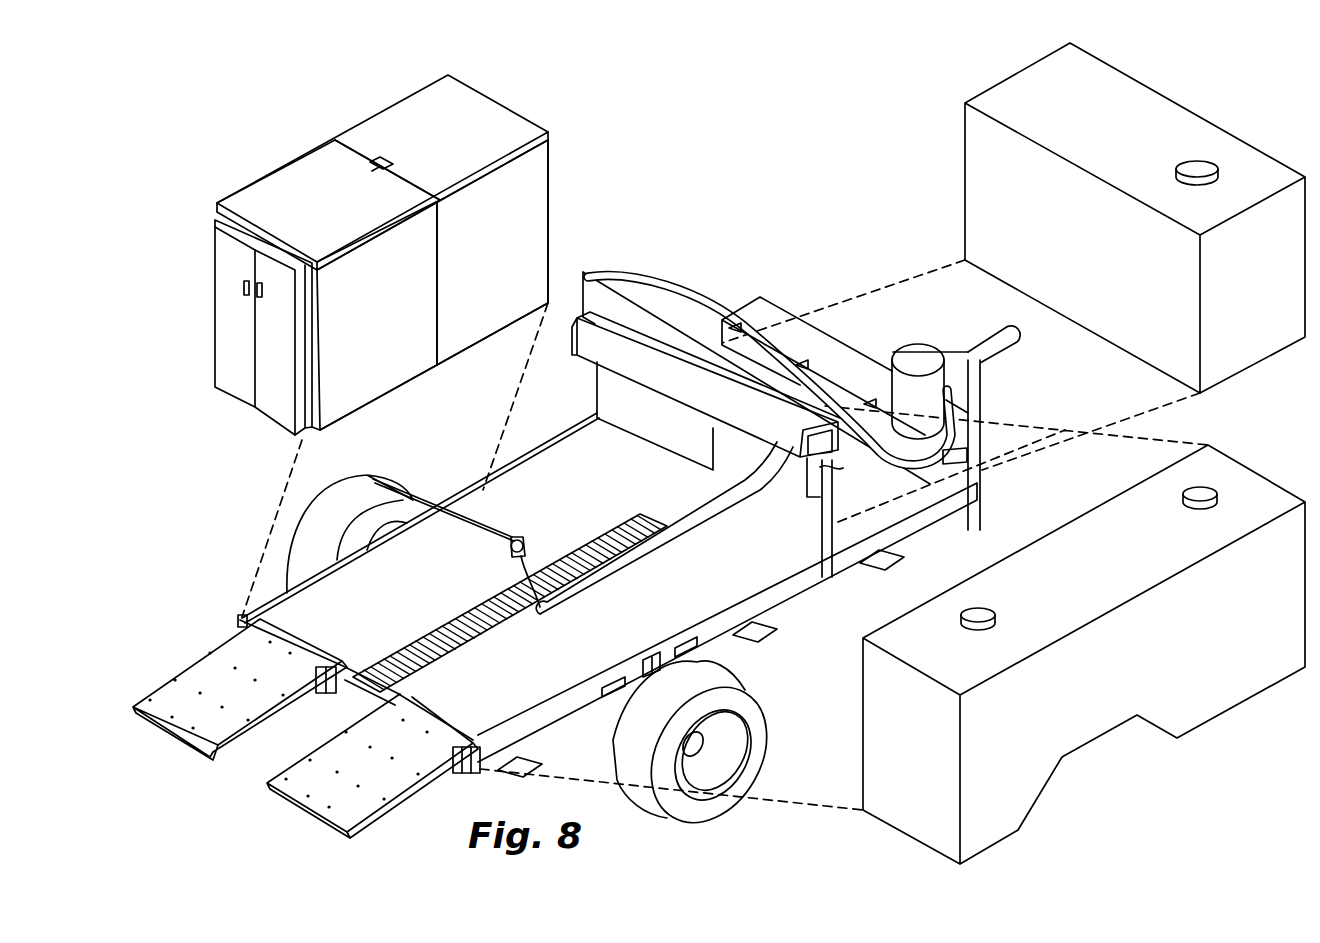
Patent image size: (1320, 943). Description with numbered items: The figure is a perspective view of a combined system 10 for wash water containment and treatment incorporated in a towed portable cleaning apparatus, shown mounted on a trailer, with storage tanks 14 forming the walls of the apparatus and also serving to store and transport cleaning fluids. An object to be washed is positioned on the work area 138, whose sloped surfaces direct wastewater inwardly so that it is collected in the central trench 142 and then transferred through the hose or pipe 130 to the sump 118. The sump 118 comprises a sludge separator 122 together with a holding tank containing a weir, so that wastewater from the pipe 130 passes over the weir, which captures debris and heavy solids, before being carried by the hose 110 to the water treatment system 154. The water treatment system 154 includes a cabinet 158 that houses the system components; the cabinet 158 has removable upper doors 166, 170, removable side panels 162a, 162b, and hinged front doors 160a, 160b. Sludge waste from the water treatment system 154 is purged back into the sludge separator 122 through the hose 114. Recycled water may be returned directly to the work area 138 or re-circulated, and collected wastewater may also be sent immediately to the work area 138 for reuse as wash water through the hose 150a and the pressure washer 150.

The combined system 10 is at (599, 523).
The storage tank 14 is at (1240, 470).
The hose 110 is at (678, 290).
The hose 114 is at (644, 313).
The sump 118 is at (856, 324).
The sludge separator 122 is at (918, 366).
The hose or pipe 130 is at (897, 495).
The work area 138 is at (330, 603).
The central trench 142 is at (485, 603).
The pressure washer 150 is at (515, 532).
The hose 150a is at (680, 527).
The water treatment system 154 is at (381, 288).
The cabinet 158 is at (381, 251).
The hinged front door 160a is at (280, 370).
The hinged front door 160b is at (233, 323).
The removable side panel 162a is at (492, 252).
The removable side panel 162b is at (377, 316).
The removable upper door 166 is at (402, 163).
The removable upper door 170 is at (328, 201).